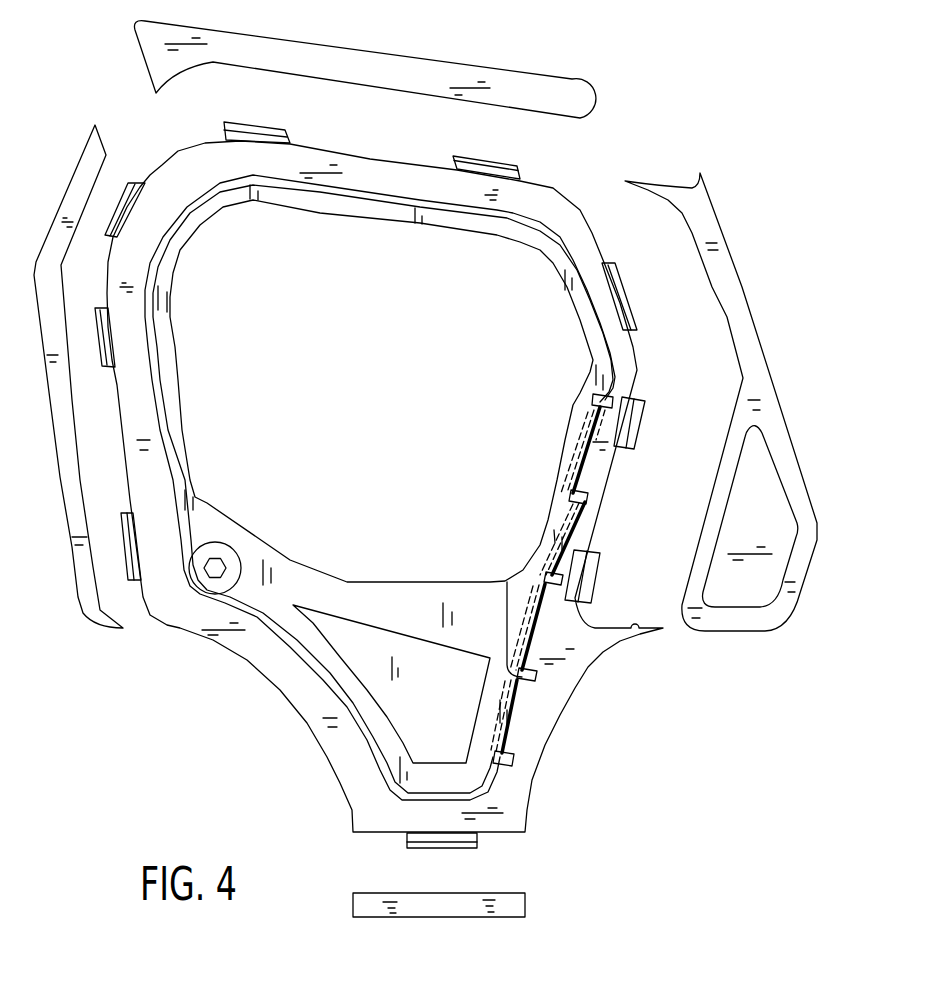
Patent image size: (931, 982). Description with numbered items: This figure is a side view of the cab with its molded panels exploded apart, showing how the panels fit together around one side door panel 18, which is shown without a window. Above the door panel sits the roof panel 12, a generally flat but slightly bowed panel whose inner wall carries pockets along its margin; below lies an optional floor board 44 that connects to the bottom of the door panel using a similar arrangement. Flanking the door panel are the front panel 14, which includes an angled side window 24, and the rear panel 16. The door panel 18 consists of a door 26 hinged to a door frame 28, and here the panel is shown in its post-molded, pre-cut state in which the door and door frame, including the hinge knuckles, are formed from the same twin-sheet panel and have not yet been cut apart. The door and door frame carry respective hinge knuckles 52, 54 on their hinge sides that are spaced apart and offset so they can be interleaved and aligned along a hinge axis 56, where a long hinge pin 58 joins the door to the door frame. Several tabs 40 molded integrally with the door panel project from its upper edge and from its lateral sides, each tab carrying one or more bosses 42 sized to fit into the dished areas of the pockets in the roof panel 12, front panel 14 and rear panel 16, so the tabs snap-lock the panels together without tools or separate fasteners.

The roof panel 12 is at (414, 57).
The front panel 14 is at (773, 383).
The rear panel 16 is at (61, 477).
The side door panel 18 is at (558, 191).
The angled side window 24 is at (728, 540).
The door 26 is at (187, 223).
The door frame 28 is at (313, 158).
The tabs 40 is at (263, 136).
The bosses 42 is at (242, 120).
The floor boards 44 is at (446, 914).
The hinge knuckles 52 is at (547, 572).
The hinge knuckles 54 is at (603, 407).
The hinge axis 56 is at (508, 758).
The hinge pin 58 is at (585, 478).